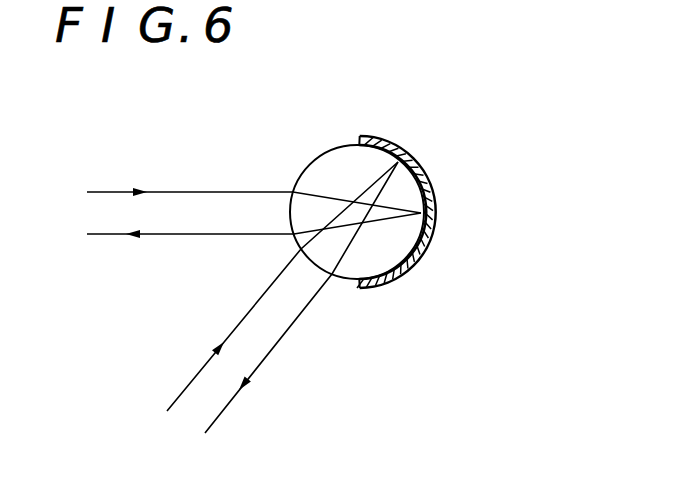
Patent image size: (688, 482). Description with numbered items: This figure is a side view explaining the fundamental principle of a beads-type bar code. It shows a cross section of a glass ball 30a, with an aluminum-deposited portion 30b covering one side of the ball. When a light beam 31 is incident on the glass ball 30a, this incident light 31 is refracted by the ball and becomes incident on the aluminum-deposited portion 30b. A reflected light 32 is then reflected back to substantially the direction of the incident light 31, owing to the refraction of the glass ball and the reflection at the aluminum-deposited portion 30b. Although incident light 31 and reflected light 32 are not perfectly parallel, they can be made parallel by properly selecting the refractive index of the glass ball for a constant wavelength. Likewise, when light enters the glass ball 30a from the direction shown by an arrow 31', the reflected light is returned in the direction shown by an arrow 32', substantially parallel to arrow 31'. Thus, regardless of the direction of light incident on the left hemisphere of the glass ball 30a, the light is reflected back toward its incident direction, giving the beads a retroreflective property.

The glass ball 30a is at (321, 156).
The aluminum-deposited portion 30b is at (428, 180).
The incident light 31 is at (254, 163).
The reflected light 32 is at (254, 255).
The arrow indicating incident light direction 31' is at (263, 286).
The arrow indicating reflected light direction 32' is at (301, 297).